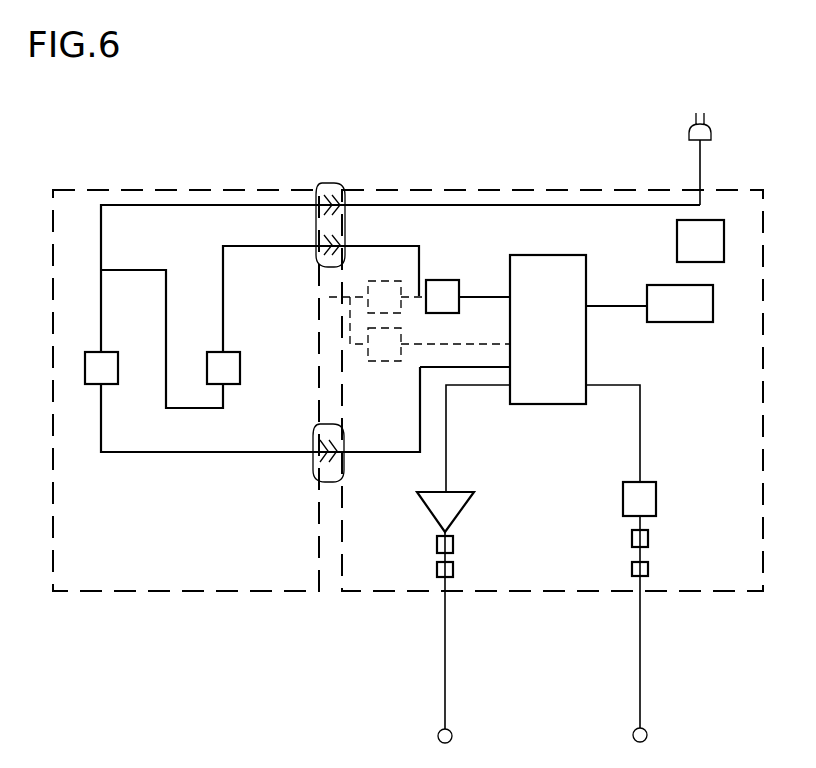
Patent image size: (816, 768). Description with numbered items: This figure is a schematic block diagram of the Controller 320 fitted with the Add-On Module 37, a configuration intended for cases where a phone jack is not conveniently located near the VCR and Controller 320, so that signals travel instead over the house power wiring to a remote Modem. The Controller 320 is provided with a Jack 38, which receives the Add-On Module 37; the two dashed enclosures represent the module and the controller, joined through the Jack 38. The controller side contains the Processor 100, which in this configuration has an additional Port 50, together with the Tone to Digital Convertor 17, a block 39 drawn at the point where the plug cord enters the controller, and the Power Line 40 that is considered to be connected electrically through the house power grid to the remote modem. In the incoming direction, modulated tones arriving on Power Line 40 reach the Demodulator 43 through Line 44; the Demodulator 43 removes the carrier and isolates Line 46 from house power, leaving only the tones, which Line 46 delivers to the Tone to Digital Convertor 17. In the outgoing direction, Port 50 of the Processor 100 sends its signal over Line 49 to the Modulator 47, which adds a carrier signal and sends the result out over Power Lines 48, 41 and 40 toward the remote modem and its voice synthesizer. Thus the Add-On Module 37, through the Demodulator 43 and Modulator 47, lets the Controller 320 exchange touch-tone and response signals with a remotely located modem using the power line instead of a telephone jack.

The Add-On Module 37 is at (262, 190).
The Controller 320 is at (582, 190).
The Power Line 40 is at (700, 175).
The power supply 39 is at (724, 241).
The Power Line 41 is at (180, 205).
The Power Line 48 is at (101, 313).
The Modulator 47 is at (85, 352).
The Line 44 is at (152, 334).
The Demodulator 43 is at (240, 368).
The Line 46 is at (223, 319).
The Line 49 is at (306, 455).
The Jack 38 is at (318, 266).
The Tone to Digital Convertor 17 is at (478, 264).
The Processor 100 is at (542, 255).
The Port 50 is at (483, 368).